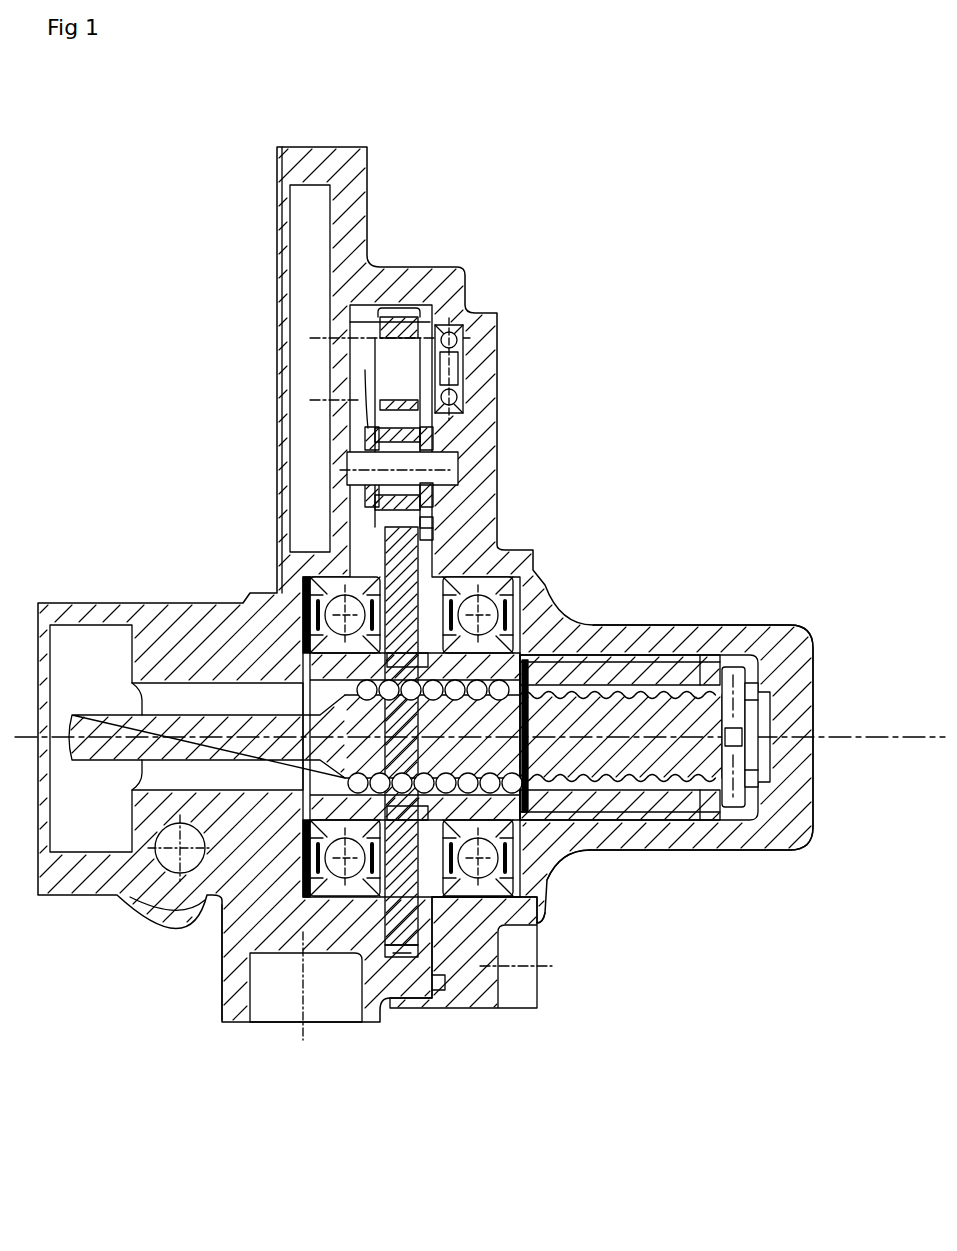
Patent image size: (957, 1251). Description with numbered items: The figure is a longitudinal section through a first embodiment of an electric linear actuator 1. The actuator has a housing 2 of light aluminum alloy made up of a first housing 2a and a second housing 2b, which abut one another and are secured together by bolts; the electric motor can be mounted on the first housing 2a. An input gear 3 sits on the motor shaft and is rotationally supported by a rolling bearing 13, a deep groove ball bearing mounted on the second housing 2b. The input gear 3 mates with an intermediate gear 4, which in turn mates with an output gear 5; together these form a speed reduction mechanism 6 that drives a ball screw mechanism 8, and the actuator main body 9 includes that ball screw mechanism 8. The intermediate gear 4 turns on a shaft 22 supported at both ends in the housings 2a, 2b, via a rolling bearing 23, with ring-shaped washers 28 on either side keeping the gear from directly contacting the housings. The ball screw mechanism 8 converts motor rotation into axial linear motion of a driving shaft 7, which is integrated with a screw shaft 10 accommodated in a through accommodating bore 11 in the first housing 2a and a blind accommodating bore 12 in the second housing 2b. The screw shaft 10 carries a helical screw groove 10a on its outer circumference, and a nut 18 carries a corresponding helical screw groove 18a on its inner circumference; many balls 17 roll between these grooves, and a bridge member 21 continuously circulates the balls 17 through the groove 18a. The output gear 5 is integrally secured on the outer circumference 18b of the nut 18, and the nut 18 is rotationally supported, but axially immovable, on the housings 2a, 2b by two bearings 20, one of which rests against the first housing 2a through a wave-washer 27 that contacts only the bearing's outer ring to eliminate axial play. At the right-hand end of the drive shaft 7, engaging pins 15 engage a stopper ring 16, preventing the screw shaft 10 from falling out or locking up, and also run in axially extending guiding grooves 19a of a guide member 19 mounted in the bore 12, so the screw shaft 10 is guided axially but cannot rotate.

The electric linear actuator 1 is at (166, 393).
The housing 2 is at (395, 1098).
The first housing 2a is at (403, 990).
The second housing 2b is at (459, 990).
The input gear 3 is at (405, 320).
The intermediate gear 4 is at (437, 503).
The output gear 5 is at (440, 537).
The speed reduction mechanism 6 is at (585, 453).
The driving shaft 7 is at (213, 733).
The ball screw mechanism 8 is at (550, 866).
The actuator main body 9 is at (646, 624).
The screw shaft 10 is at (670, 805).
The helical screw groove 10a is at (607, 780).
The accommodating bore 11 is at (130, 705).
The accommodating bore 12 is at (692, 667).
The rolling bearing 13 is at (455, 340).
The engaging pin 15 is at (735, 673).
The stopper ring 16 is at (528, 681).
The balls 17 is at (498, 693).
The nut 18 is at (300, 600).
The helical screw groove 18a is at (395, 773).
The outer circumference 18b is at (358, 695).
The guide member 19 is at (637, 657).
The guiding groove 19a is at (583, 652).
The bearing 20 is at (220, 952).
The bridge member 21 is at (445, 783).
The shaft 22 is at (360, 462).
The rolling bearing 23 is at (367, 445).
The washer 27 is at (298, 585).
The washer 28 is at (365, 497).